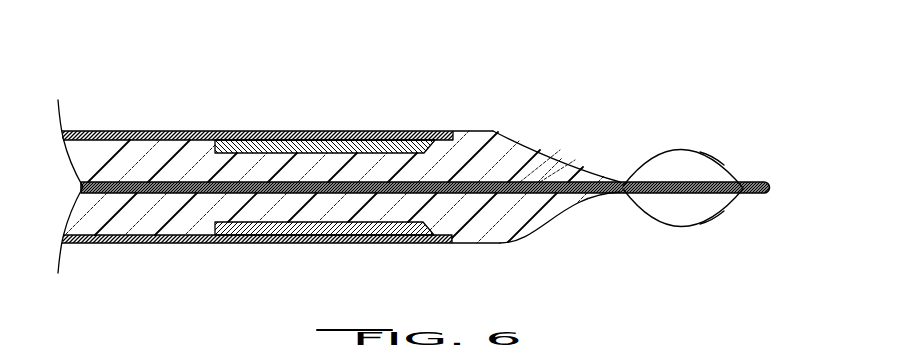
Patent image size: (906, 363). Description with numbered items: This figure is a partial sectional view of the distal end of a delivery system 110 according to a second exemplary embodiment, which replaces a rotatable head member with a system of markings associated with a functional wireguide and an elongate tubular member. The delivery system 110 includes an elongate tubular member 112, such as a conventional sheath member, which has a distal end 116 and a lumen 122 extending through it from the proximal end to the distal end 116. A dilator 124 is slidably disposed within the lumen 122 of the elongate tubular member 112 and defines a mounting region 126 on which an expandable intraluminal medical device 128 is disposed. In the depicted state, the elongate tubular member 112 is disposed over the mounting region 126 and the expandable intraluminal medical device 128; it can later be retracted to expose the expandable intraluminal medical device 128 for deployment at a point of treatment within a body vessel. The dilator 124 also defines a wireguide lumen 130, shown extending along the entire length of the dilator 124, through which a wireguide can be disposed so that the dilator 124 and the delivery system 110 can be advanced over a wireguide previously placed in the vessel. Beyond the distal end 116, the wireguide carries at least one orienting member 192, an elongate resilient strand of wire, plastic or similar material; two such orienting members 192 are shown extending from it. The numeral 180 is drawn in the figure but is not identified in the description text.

The delivery system 110 is at (338, 107).
The elongate tubular member 112 is at (170, 131).
The distal end 116 is at (438, 131).
The lumen 122 is at (206, 147).
The dilator 124 is at (148, 213).
The mounting region 126 is at (392, 222).
The expandable intraluminal medical device 128 is at (310, 237).
The wireguide lumen 130 is at (503, 178).
The balloon 180 is at (626, 194).
The orienting member 192 is at (712, 159).